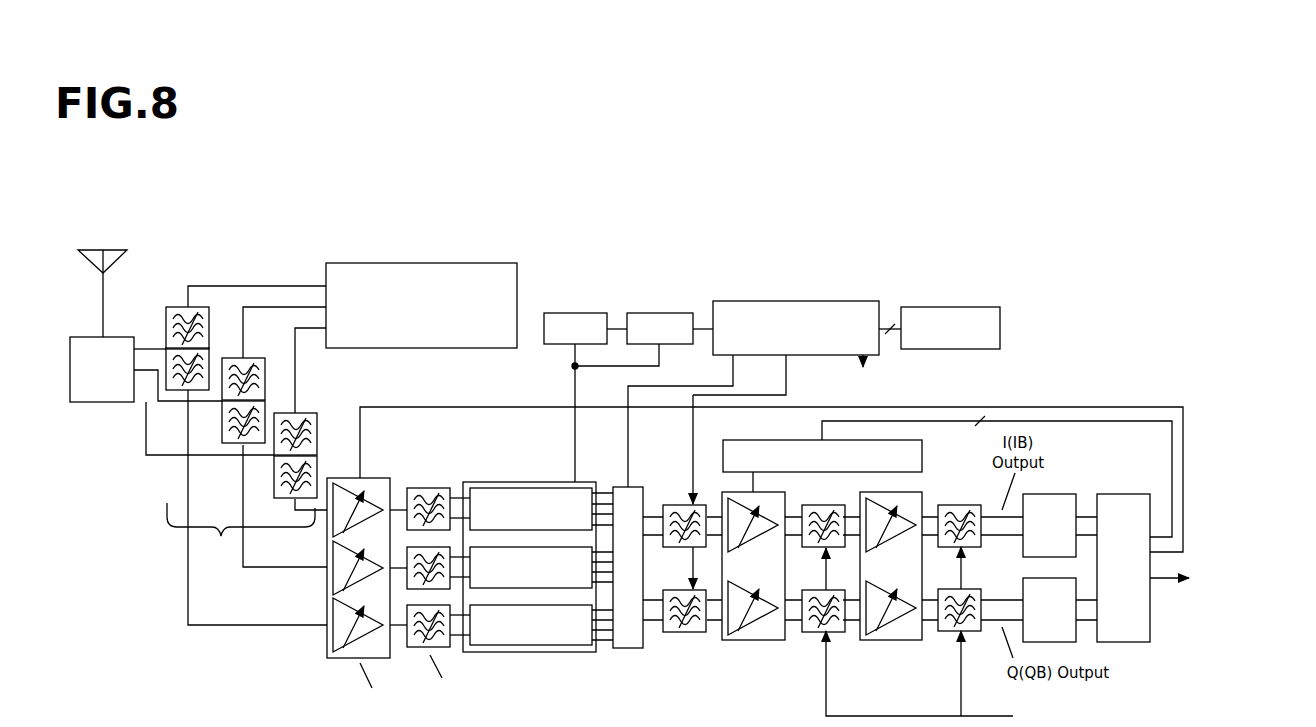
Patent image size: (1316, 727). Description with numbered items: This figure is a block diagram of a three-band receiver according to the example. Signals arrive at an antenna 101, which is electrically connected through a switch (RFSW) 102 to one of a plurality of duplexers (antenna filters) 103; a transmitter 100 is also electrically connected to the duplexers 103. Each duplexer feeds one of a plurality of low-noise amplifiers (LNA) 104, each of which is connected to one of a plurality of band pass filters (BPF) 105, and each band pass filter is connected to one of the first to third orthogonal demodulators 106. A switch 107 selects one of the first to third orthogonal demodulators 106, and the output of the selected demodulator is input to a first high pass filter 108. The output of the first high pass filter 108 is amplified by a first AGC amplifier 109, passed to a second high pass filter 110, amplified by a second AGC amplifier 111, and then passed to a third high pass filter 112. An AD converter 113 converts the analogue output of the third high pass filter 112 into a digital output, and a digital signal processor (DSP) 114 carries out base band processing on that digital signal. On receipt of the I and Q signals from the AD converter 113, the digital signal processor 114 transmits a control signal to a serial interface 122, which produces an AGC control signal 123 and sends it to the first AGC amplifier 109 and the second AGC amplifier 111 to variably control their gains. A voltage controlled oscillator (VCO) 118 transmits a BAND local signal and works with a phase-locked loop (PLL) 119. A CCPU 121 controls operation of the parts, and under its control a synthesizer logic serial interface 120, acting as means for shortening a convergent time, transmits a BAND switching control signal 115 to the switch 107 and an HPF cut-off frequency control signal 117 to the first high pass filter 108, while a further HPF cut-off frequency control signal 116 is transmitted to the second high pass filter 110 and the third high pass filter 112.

The transmitter 100 is at (445, 263).
The antenna 101 is at (112, 250).
The switch (RFSW) 102 is at (128, 337).
The duplexers (antenna filters) 103 is at (221, 540).
The low-noise amplifiers (LNA) 104 is at (378, 478).
The band pass filters (BPF) 105 is at (430, 488).
The first to third orthogonal demodulators 106 is at (520, 482).
The switch 107 is at (640, 487).
The first high pass filter 108 is at (678, 632).
The first AGC amplifier 109 is at (755, 640).
The second high pass filter 110 is at (828, 505).
The second AGC amplifier 111 is at (900, 640).
The third high pass filter 112 is at (950, 505).
The AD converter 113 is at (1065, 494).
The digital signal processor (DSP) 114 is at (1130, 494).
The BAND switching control signal 115 is at (680, 421).
The HPF cut-off frequency control signal 116 is at (939, 540).
The HPF cut-off frequency control signal 117 is at (739, 375).
The voltage controlled oscillator (VCO) 118 is at (577, 313).
The phase-locked loop (PLL) 119 is at (660, 313).
The synthesizer logic serial interface 120 is at (800, 301).
The CCPU 121 is at (940, 307).
The serial interface 122 is at (757, 441).
The AGC control signal 123 is at (755, 484).